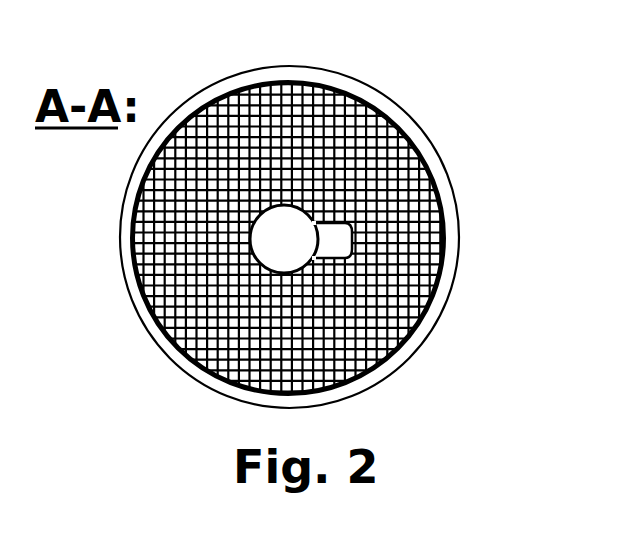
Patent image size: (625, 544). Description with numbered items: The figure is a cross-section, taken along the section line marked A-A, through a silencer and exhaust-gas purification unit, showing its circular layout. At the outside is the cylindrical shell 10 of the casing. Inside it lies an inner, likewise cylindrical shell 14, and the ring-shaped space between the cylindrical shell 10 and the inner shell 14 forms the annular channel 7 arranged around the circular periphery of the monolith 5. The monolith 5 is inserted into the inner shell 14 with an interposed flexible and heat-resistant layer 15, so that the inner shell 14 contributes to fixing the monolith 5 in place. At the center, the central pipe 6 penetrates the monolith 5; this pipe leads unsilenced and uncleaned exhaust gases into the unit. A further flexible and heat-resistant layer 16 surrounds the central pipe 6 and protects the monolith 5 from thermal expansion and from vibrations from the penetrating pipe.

The monolith 5 is at (420, 145).
The central pipe 6 is at (284, 239).
The annular channel 7 is at (262, 78).
The cylindrical shell 10 is at (210, 81).
The inner shell 14 is at (313, 80).
The flexible and heat-resistant layer 15 is at (365, 100).
The further flexible and heat-resistant layer 16 is at (289, 271).